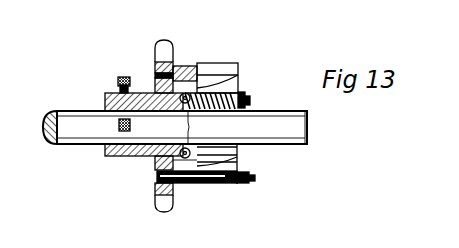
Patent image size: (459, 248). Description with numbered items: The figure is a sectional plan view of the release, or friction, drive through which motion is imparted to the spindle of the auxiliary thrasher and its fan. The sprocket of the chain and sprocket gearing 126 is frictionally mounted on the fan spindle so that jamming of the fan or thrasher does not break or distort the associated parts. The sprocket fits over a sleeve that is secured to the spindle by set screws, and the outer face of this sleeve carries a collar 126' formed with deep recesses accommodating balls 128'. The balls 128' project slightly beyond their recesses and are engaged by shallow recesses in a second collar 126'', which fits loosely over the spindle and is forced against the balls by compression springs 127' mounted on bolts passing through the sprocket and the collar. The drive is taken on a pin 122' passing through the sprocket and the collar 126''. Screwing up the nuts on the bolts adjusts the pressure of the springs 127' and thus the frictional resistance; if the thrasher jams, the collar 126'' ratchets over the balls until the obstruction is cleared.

The chain and sprocket gearing 126 is at (163, 114).
The collar 126' is at (119, 68).
The collar 126'' is at (241, 177).
The pin 122' is at (204, 61).
The balls 128' is at (242, 117).
The compression springs 127' is at (225, 146).